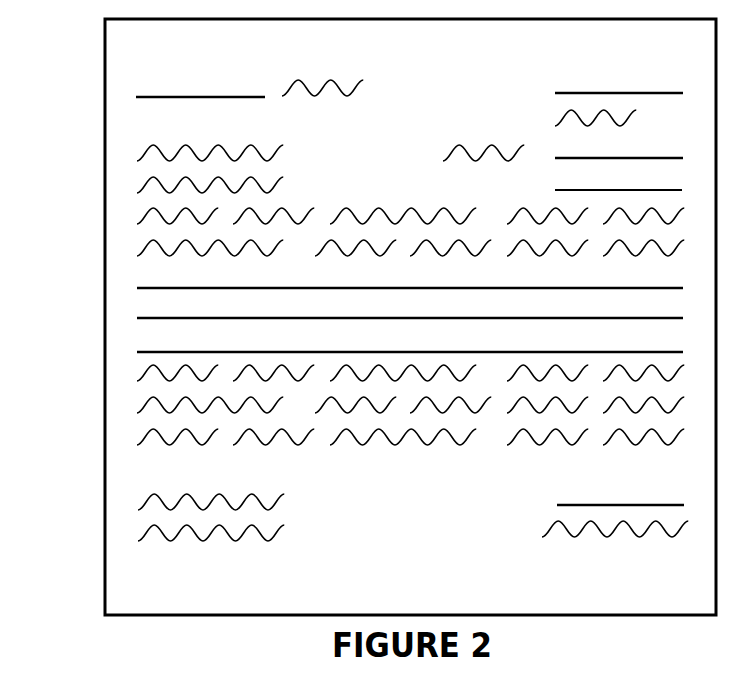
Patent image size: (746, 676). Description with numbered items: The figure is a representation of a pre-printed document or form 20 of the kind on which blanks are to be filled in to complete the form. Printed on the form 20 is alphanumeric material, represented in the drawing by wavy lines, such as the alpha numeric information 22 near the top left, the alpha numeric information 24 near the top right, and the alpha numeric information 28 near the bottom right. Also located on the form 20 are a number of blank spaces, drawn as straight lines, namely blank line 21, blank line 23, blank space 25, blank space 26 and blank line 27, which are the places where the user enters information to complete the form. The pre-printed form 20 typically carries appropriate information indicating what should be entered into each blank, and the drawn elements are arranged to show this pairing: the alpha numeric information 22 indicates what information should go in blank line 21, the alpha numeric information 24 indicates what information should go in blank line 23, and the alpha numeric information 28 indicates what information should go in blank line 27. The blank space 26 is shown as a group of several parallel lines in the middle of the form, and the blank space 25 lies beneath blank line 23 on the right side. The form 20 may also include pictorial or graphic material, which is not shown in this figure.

The pre-printed form 20 is at (103, 50).
The blank line 21 is at (168, 97).
The alpha numeric information 22 is at (331, 80).
The blank line 23 is at (570, 93).
The alpha numeric information 24 is at (555, 126).
The blank space 25 is at (635, 158).
The blank space 26 is at (137, 288).
The blank line 27 is at (572, 505).
The alpha numeric information 28 is at (574, 537).